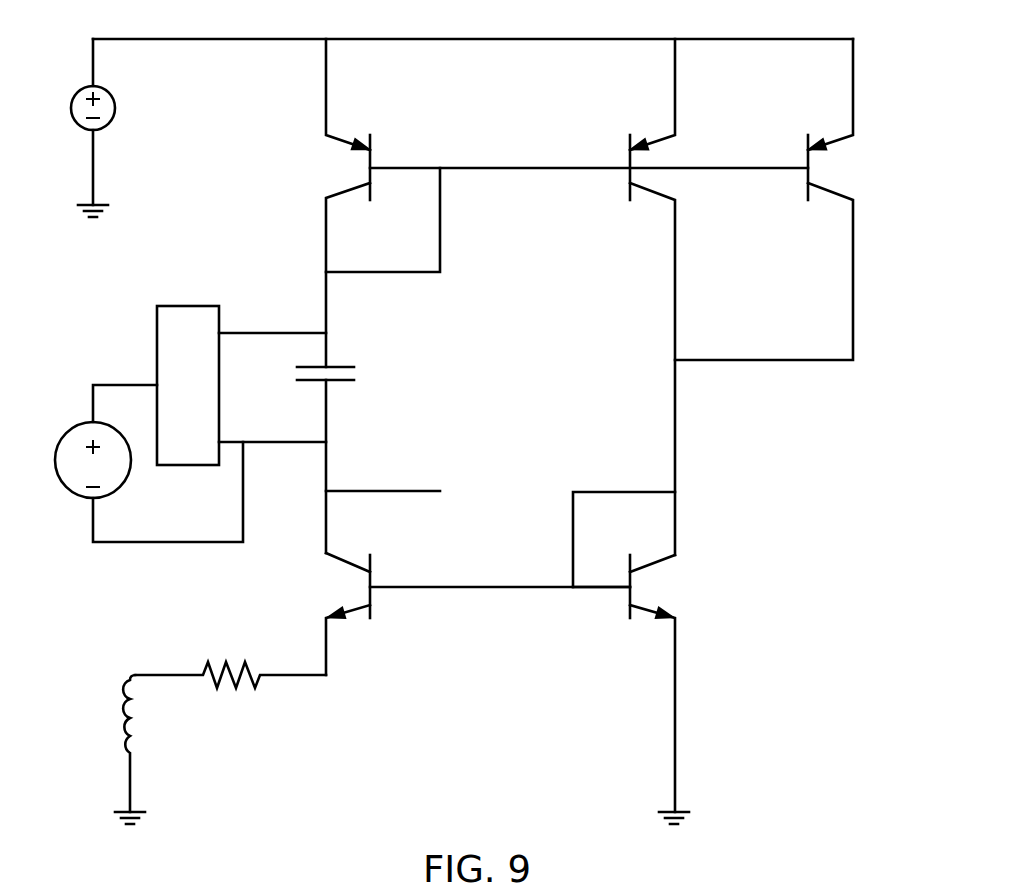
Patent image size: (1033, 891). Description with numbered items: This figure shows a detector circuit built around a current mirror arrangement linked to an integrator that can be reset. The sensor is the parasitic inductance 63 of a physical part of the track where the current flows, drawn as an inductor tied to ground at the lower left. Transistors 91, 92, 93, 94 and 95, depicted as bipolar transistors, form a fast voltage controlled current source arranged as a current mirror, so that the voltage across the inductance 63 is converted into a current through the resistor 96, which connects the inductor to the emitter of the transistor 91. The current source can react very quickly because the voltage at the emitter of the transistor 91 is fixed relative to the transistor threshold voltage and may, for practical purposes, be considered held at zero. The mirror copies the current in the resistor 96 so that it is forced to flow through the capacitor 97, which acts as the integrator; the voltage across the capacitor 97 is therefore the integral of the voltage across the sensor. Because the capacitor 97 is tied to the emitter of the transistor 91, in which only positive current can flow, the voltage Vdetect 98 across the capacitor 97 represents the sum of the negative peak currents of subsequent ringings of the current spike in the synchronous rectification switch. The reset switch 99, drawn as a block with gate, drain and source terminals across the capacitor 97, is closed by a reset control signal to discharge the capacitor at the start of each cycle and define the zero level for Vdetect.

The parasitic inductance 63 is at (120, 702).
The transistor 91 is at (350, 608).
The transistor 92 is at (675, 587).
The transistor 93 is at (360, 168).
The transistor 94 is at (630, 147).
The transistor 95 is at (853, 168).
The resistor 96 is at (217, 687).
The capacitor 97 is at (342, 382).
The Vdetect 98 is at (402, 492).
The reset switch 99 is at (190, 424).